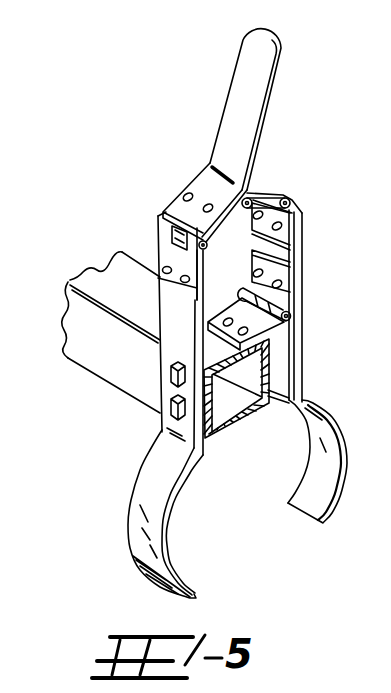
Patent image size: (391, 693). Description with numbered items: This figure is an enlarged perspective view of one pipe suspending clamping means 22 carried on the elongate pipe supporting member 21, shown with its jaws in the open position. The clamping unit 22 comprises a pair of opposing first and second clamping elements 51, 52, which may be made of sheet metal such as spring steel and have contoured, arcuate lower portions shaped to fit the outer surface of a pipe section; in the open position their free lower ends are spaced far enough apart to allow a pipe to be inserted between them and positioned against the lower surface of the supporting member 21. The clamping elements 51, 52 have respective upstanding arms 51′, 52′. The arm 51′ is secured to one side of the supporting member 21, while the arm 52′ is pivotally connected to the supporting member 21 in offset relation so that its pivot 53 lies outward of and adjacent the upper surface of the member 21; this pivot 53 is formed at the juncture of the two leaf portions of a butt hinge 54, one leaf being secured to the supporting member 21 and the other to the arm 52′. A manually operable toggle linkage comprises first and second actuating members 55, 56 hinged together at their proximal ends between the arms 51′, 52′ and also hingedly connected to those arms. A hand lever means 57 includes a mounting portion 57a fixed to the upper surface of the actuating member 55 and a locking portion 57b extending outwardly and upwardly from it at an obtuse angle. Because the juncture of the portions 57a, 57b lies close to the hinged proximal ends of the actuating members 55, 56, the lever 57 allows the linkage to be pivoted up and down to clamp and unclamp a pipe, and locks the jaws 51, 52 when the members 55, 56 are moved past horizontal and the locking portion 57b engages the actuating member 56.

The elongate pipe supporting member 21 is at (105, 270).
The pipe suspending clamping means 22 is at (163, 166).
The first clamping element 51 is at (168, 575).
The upstanding arm of first clamping element 51′ is at (175, 347).
The second clamping element 52 is at (310, 508).
The upstanding arm of second clamping element 52′ is at (296, 250).
The pivot 53 is at (290, 316).
The butt hinge 54 is at (250, 320).
The first actuating member 55 is at (170, 250).
The second actuating member 56 is at (258, 188).
The hand lever means 57 is at (281, 47).
The mounting portion 57a is at (200, 180).
The locking portion 57b is at (257, 82).